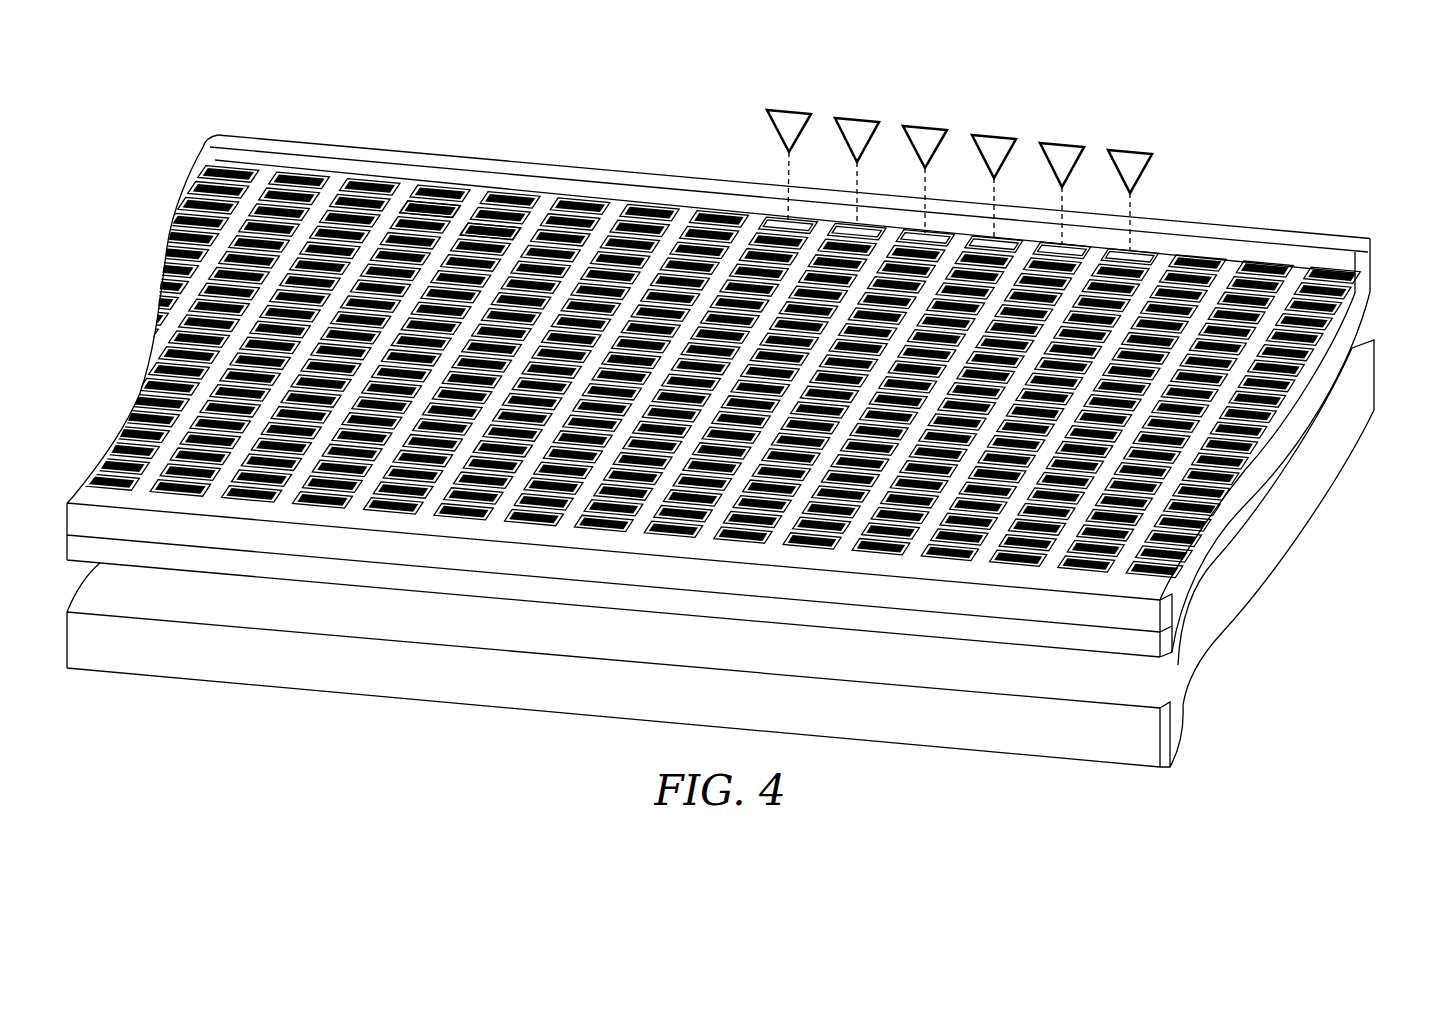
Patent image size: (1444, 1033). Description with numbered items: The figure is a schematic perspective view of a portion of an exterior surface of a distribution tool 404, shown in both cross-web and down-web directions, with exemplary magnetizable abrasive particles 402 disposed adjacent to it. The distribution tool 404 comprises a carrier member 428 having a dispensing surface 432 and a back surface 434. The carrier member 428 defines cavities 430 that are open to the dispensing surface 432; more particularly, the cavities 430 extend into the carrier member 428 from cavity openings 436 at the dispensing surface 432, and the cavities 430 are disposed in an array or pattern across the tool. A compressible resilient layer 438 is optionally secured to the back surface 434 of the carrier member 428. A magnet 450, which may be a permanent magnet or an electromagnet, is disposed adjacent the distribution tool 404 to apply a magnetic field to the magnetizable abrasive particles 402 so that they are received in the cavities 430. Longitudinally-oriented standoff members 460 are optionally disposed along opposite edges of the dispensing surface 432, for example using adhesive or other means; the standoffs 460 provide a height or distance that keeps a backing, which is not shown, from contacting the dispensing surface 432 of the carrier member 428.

The magnetizable abrasive particles 402 is at (1062, 150).
The distribution tool 404 is at (256, 111).
The carrier member 428 is at (1282, 428).
The cavities 430 is at (630, 241).
The dispensing surface 432 is at (1347, 335).
The back surface 434 is at (1223, 527).
The cavity openings 436 is at (491, 228).
The compressible resilient layer 438 is at (1250, 483).
The magnet 450 is at (233, 665).
The standoff members 460 is at (705, 187).